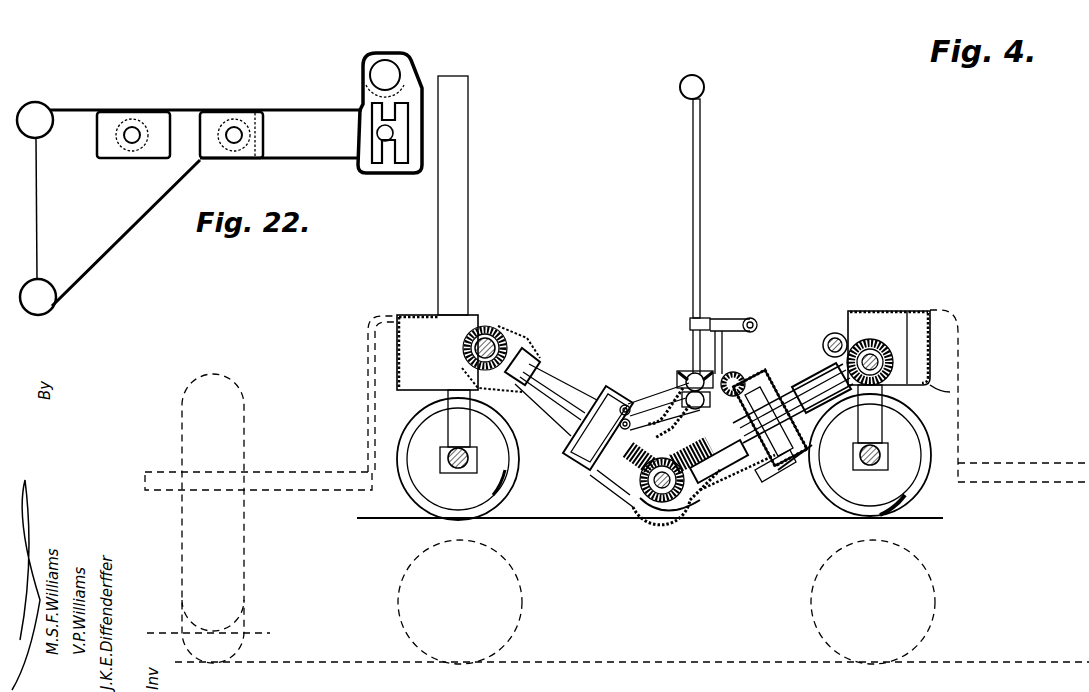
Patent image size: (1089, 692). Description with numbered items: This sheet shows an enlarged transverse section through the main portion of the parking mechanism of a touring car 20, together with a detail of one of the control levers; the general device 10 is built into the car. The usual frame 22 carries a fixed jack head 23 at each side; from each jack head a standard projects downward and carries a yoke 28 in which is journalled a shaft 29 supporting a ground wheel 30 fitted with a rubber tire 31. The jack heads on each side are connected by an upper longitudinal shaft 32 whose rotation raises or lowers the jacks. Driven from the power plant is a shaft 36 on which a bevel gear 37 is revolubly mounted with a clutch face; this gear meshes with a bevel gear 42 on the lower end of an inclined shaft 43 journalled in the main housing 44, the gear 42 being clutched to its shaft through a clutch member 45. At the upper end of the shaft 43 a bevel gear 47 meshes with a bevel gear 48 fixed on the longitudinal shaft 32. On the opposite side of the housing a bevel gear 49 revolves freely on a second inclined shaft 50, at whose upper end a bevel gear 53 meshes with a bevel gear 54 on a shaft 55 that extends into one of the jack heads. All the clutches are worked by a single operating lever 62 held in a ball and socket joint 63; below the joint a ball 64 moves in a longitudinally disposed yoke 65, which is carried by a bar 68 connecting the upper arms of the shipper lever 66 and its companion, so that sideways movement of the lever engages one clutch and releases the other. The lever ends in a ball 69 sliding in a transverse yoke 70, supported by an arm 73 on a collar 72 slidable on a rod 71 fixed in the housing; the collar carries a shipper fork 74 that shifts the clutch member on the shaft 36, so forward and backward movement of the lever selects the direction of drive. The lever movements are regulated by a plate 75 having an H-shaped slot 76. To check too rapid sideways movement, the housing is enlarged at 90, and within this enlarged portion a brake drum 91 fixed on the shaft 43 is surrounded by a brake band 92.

In FIG. 4, the machine frame 10 is at (724, 386).
In FIG. 4, the touring car 20 is at (345, 489).
In FIG. 4, the frame 22 is at (397, 350).
In FIG. 4, the jack head 23 is at (922, 309).
In FIG. 4, the yoke 28 is at (458, 413).
In FIG. 4, the shaft 29 is at (452, 472).
In FIG. 4, the ground wheel 30 is at (486, 492).
In FIG. 4, the tire 31 is at (905, 495).
In FIG. 4, the upper longitudinal shaft 32 is at (876, 337).
In FIG. 4, the shaft 36 is at (646, 500).
In FIG. 4, the bevel gear 37 is at (668, 503).
In FIG. 4, the bevel gear 42 is at (714, 495).
In FIG. 4, the inclined shaft 43 is at (830, 370).
In FIG. 4, the main housing 44 is at (775, 470).
In FIG. 4, the clutch member 45 is at (740, 470).
In FIG. 4, the bevel gear 47 is at (842, 336).
In FIG. 4, the bevel gear 48 is at (895, 383).
In FIG. 4, the bevel gear 49 is at (640, 482).
In FIG. 4, the inclined shaft 50 is at (532, 368).
In FIG. 4, the bevel gear 53 is at (506, 345).
In FIG. 4, the bevel gear 54 is at (484, 328).
In FIG. 4, the shaft 55 is at (492, 330).
In FIG. 22, the operating lever 62 is at (383, 137).
In FIG. 4, the operating lever 62 is at (692, 346).
In FIG. 4, the ball and socket joint 63 is at (690, 373).
In FIG. 4, the ball 64 is at (693, 386).
In FIG. 4, the yoke 65 is at (748, 320).
In FIG. 4, the shipper lever 66 is at (790, 470).
In FIG. 4, the bar 68 is at (660, 392).
In FIG. 4, the ball 69 is at (674, 400).
In FIG. 4, the yoke 70 is at (730, 374).
In FIG. 4, the rod 71 is at (622, 413).
In FIG. 4, the collar 72 is at (622, 428).
In FIG. 4, the arm 73 is at (588, 470).
In FIG. 4, the shipper fork 74 is at (692, 500).
In FIG. 22, the plate 75 is at (286, 113).
In FIG. 22, the H-shaped slot 76 is at (372, 112).
In FIG. 4, the enlarged portion 90 is at (750, 382).
In FIG. 4, the brake drum 91 is at (772, 400).
In FIG. 4, the brake band 92 is at (792, 466).